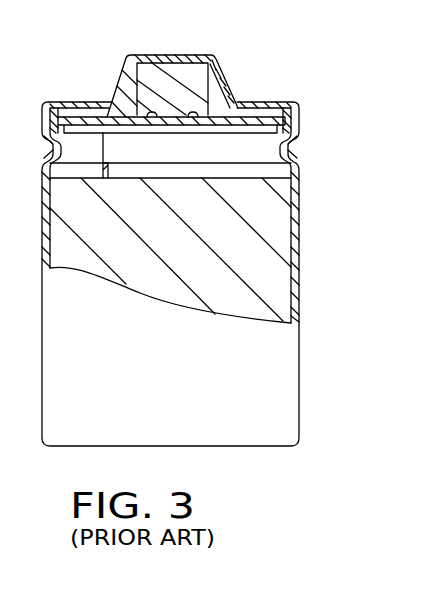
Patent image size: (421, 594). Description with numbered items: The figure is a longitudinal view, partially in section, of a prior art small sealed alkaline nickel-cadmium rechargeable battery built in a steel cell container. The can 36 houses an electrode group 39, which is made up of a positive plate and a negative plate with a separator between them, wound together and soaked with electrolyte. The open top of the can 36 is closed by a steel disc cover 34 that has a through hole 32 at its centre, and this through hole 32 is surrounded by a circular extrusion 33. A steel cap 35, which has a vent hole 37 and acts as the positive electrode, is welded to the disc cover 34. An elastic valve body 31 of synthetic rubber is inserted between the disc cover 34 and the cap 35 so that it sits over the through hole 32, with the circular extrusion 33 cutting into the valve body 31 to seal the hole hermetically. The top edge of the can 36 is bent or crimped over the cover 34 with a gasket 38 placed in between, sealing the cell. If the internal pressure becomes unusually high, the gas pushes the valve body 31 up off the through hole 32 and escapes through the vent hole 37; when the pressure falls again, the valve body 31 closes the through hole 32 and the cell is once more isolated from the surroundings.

The elastic valve body 31 is at (183, 68).
The through hole 32 is at (168, 127).
The circular extrusion 33 is at (152, 112).
The steel disc cover 34 is at (228, 125).
The steel cap 35 is at (182, 70).
The can 36 is at (302, 285).
The vent hole 37 is at (234, 95).
The gasket 38 is at (300, 118).
The electrode group 39 is at (288, 227).